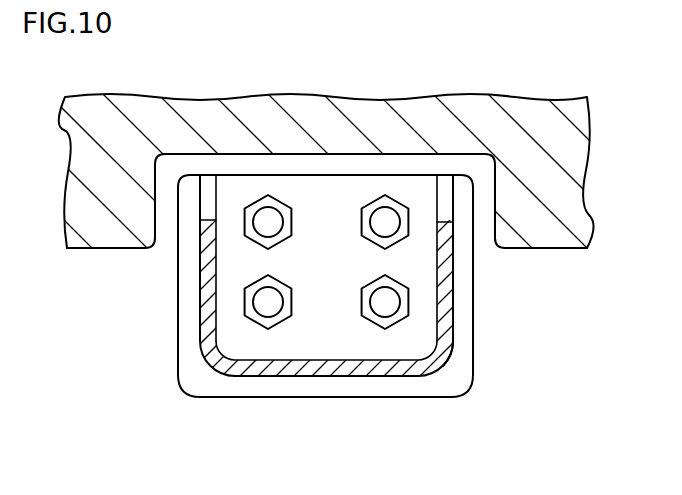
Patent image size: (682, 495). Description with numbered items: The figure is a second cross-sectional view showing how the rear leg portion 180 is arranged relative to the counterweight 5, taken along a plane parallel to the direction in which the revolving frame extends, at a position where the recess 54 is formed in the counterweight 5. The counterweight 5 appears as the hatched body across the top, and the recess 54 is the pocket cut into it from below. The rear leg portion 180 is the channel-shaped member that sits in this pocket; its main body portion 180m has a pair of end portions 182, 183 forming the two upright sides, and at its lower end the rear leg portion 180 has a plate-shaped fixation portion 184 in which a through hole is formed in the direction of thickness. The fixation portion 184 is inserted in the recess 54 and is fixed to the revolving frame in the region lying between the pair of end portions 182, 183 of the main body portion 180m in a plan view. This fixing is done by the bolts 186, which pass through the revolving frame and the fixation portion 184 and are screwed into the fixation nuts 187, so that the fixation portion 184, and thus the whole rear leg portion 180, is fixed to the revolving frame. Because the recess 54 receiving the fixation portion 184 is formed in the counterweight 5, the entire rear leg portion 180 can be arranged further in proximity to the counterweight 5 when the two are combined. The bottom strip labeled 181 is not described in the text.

The counterweight 5 is at (367, 127).
The recess 54 is at (305, 165).
The rear leg portion 180 is at (442, 398).
The main body portion 180m is at (452, 354).
The bottom plate 181 is at (348, 368).
The end portion 182 is at (200, 294).
The end portion 183 is at (442, 295).
The fixation portion 184 is at (193, 361).
The bolt 186 is at (268, 300).
The fixation nut 187 is at (277, 317).